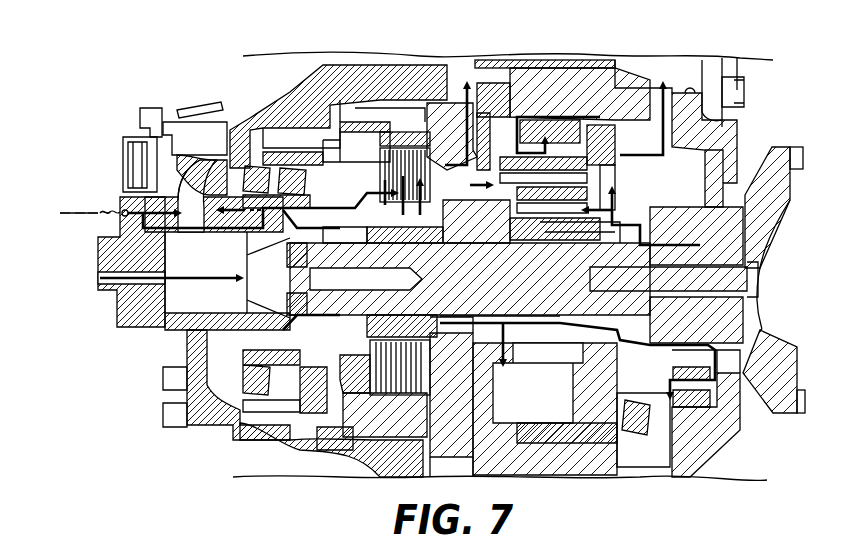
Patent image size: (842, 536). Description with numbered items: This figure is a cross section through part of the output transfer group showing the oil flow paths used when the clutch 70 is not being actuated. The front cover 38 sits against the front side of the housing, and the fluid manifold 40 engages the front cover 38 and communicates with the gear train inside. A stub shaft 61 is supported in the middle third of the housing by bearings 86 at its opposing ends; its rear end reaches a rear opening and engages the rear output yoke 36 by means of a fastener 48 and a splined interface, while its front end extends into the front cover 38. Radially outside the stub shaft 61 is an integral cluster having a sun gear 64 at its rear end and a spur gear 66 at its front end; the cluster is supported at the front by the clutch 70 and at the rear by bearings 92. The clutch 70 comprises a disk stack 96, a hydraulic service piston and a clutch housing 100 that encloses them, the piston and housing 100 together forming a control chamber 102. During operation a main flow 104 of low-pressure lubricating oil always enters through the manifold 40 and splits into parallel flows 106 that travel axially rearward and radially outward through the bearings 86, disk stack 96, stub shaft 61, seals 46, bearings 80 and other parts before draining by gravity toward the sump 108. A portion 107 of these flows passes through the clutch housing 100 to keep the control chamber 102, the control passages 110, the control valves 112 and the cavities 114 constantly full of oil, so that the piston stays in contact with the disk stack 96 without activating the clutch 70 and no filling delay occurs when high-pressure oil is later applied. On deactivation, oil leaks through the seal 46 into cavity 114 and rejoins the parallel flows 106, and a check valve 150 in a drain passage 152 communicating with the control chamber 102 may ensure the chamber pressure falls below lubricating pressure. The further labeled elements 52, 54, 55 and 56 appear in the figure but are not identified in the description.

The rear output yoke 36 is at (703, 246).
The front cover 38 is at (325, 115).
The fluid manifold 40 is at (149, 251).
The seals 46 is at (240, 190).
The fastener 48 is at (690, 280).
The housing cover 52 is at (572, 62).
The clutch housing 54 is at (576, 98).
The clutch plate 55 is at (540, 130).
The clutch pack 56 is at (505, 160).
The stub shaft 61 is at (503, 283).
The sun gear 64 is at (555, 350).
The spur gear 66 is at (454, 426).
The clutch 70 is at (323, 425).
The bearings 80 is at (690, 150).
The bearings 86 is at (325, 248).
The bearings 92 is at (560, 240).
The disk stack 96 is at (459, 137).
The clutch housing 100 is at (352, 362).
The control chamber 102 is at (352, 190).
The main flow 104 is at (110, 285).
The parallel flows 106 is at (247, 255).
The portion of parallel flows 107 is at (272, 190).
The sump 108 is at (225, 204).
The control passages 110 is at (185, 213).
The control valves 112 is at (142, 122).
The cavities 114 is at (230, 175).
The check valve 150 is at (100, 209).
The drain passage 152 is at (70, 209).